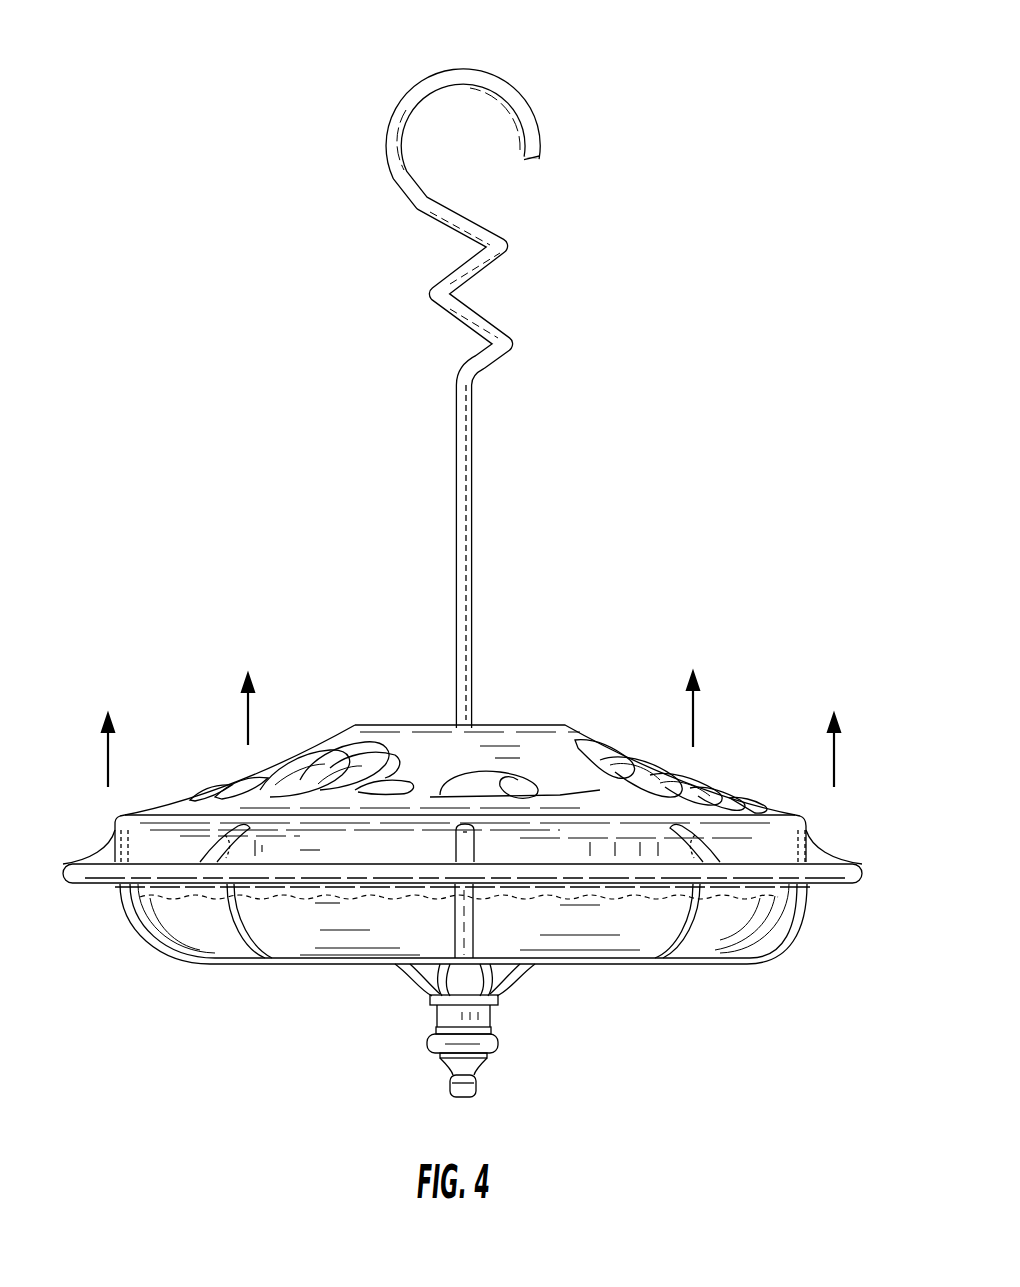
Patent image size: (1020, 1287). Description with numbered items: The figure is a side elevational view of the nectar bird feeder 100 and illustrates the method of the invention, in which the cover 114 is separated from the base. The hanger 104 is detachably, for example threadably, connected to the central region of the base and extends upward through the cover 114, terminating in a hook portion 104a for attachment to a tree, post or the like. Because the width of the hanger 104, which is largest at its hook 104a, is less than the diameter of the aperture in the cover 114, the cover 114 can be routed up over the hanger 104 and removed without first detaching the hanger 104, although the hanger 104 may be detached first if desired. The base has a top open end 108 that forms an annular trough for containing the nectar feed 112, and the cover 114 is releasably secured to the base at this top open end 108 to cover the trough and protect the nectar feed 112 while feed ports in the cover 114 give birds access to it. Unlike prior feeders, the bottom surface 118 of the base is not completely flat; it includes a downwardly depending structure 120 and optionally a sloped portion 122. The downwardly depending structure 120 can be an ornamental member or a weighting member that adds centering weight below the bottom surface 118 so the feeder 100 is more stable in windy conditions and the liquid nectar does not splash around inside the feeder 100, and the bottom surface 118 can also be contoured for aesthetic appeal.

The bird feeder 100 is at (585, 559).
The hanger 104 is at (467, 495).
The hook portion 104a is at (500, 82).
The top open end 108 is at (810, 827).
The nectar feed 112 is at (733, 927).
The cover 114 is at (676, 806).
The bottom surface 118 is at (518, 984).
The downwardly depending structure 120 is at (484, 1063).
The sloped portion 122 is at (418, 982).